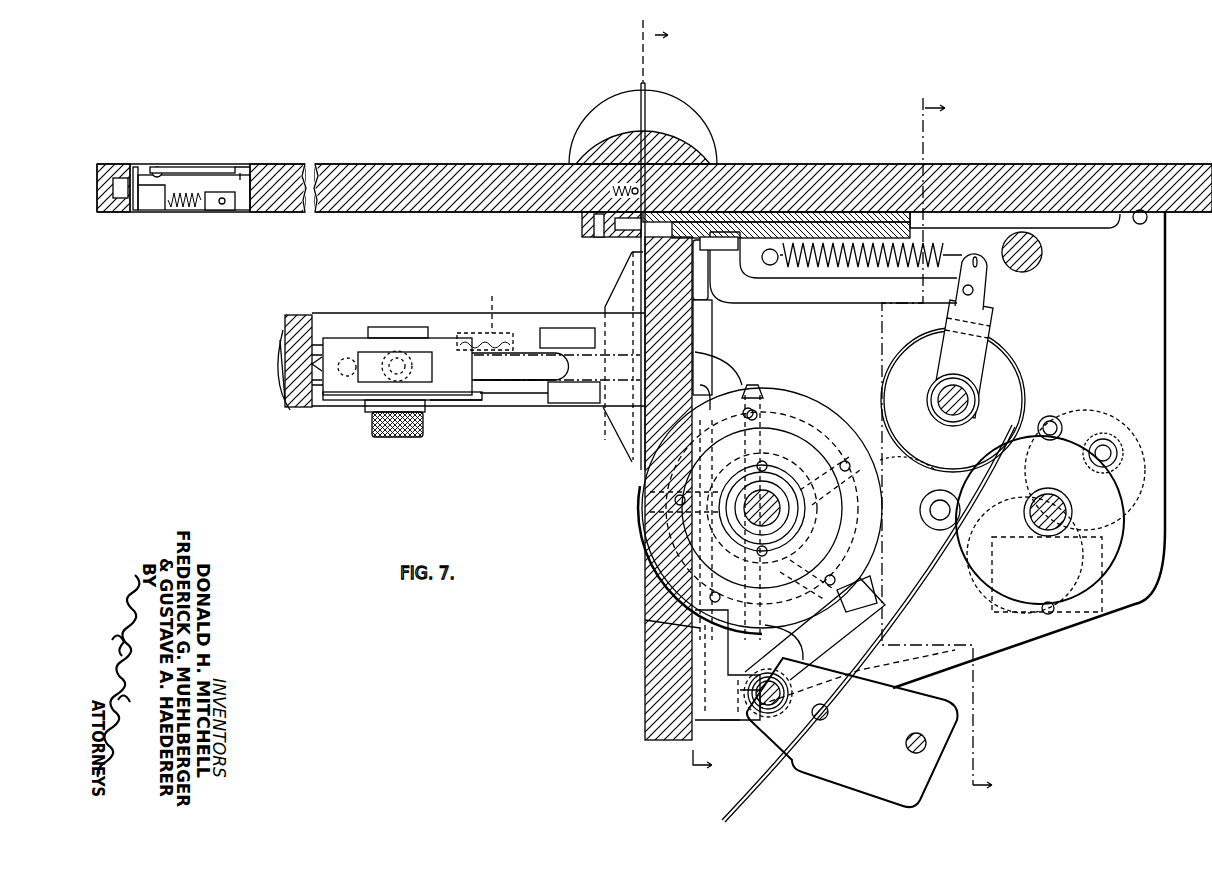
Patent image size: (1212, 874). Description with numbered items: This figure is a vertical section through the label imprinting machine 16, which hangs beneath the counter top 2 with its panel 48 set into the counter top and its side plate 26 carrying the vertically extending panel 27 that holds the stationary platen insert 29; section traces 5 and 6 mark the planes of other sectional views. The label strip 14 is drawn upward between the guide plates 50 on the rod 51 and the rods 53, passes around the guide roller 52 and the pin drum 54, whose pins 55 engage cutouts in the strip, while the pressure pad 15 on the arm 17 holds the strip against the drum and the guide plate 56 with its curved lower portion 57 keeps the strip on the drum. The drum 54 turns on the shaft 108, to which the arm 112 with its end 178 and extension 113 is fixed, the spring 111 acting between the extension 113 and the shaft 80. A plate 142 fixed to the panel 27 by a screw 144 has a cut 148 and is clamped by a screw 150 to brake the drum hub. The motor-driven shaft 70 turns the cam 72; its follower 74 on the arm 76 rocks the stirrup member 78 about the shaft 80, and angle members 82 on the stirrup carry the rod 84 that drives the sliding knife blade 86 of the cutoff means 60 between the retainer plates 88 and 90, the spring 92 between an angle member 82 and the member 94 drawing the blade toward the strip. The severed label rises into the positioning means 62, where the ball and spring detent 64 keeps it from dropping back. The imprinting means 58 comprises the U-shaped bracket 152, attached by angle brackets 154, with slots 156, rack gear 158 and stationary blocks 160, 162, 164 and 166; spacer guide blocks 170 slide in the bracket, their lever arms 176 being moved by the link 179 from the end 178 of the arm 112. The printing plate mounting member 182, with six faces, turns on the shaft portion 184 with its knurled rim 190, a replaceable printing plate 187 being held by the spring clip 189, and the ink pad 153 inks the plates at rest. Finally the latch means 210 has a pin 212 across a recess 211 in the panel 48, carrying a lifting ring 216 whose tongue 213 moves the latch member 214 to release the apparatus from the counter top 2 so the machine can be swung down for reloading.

The counter top 2 is at (110, 166).
The section line 5- 5 is at (663, 397).
The section line 6- 6 is at (948, 443).
The label strip 14 is at (884, 350).
The pressure pad 15 is at (865, 586).
The imprinting machine 16 is at (564, 505).
The arm 17 is at (838, 632).
The side plate 26 is at (1167, 428).
The vertically extending panel 27 is at (645, 620).
The insert 29 is at (660, 372).
The panel 48 is at (425, 165).
The guide plates 50 is at (933, 772).
The rod 51 is at (790, 690).
The guide roller 52 is at (1005, 365).
The rods 53 is at (822, 722).
The pin drum 54 is at (808, 405).
The pins 55 is at (756, 394).
The guide plate 56 is at (643, 520).
The lower portion 57 is at (700, 628).
The imprinting means 58 is at (551, 440).
The cutoff means 60 is at (579, 247).
The severed label positioning means 62 is at (608, 106).
The ball and spring detent arrangement 64 is at (581, 160).
The shaft 70 is at (1032, 504).
The cam 72 is at (1112, 600).
The cam follower 74 is at (935, 528).
The arm 76 is at (932, 462).
The stirrup member 78 is at (990, 318).
The shaft 80 is at (940, 398).
The angle members 82 is at (985, 275).
The rod 84 is at (830, 303).
The sliding knife blade 86 is at (800, 222).
The retainer plate 88 is at (758, 212).
The retainer plate 90 is at (620, 238).
The spring 92 is at (945, 252).
The member 94 is at (745, 265).
The shaft 108 is at (770, 500).
The spring 111 is at (878, 432).
The arm 112 is at (745, 378).
The extension 113 is at (762, 508).
The plate 142 is at (722, 738).
The screw 144 is at (742, 718).
The cut 148 is at (727, 665).
The screw 150 is at (793, 626).
The U-shaped bracket 152 is at (285, 372).
The ink pad 153 is at (300, 408).
The angle brackets 154 is at (618, 435).
The elongated slot 156 is at (503, 395).
The rack gear 158 is at (485, 317).
The block 160 is at (430, 335).
The block 162 is at (440, 408).
The block 164 is at (566, 328).
The block 166 is at (578, 403).
The spacer guide blocks 170 is at (347, 358).
The lever arms 176 is at (372, 392).
The end 178 is at (712, 330).
The link 179 is at (527, 352).
The printing plate mounting member 182 is at (463, 398).
The shaft portion 184 is at (372, 413).
The replaceable printing plate 187 is at (285, 368).
The spring clip 189 is at (330, 345).
The knurled rim 190 is at (396, 438).
The latch means 210 is at (202, 123).
The recess 211 is at (255, 175).
The pin 212 is at (156, 167).
The tongue 213 is at (152, 207).
The latch member 214 is at (178, 207).
The member 216 is at (207, 166).